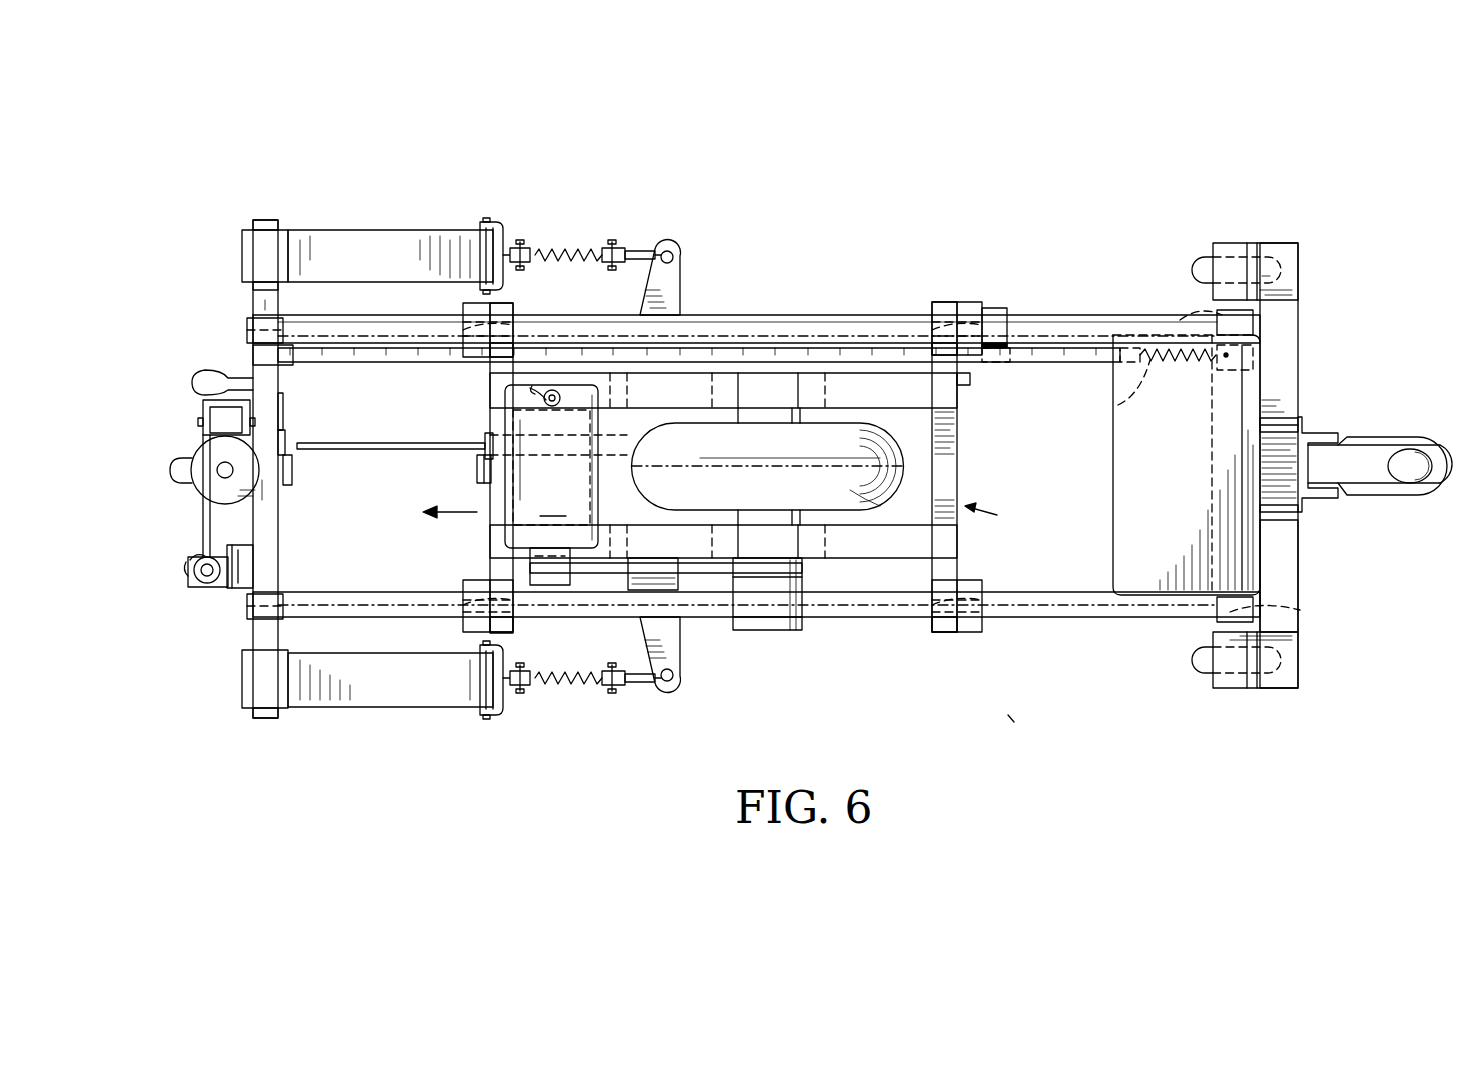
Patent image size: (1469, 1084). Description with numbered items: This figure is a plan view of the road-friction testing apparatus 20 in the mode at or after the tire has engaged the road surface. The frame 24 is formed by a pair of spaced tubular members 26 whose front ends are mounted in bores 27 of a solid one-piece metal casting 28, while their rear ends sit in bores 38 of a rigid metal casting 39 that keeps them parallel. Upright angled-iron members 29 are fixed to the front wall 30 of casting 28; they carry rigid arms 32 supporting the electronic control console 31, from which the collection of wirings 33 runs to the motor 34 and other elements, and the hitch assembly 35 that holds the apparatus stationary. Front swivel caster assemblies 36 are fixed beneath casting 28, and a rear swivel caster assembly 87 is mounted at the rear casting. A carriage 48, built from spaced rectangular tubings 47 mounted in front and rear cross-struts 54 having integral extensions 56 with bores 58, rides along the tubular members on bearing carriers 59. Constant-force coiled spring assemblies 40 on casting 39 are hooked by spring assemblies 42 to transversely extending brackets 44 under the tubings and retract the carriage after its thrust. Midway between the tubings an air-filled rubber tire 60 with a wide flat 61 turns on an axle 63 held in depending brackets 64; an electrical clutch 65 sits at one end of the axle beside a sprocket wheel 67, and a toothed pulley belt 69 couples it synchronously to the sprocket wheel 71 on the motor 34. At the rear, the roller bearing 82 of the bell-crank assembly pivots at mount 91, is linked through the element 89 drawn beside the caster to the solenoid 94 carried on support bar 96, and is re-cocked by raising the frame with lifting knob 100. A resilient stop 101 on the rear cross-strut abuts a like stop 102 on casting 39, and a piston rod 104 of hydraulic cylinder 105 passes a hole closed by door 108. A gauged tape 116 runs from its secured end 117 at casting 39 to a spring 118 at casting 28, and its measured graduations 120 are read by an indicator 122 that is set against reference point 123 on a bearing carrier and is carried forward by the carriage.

The apparatus 20 is at (1008, 715).
The frame 24 is at (734, 330).
The tubular members 26 is at (1098, 315).
The bores 27 is at (1180, 318).
The solid one-piece metal casting 28 is at (1290, 325).
The upright angled-iron members 29 is at (1320, 433).
The front wall 30 is at (1298, 580).
The electronic control console 31 is at (1113, 480).
The rigid arms 32 is at (1272, 418).
The collection of wirings 33 is at (544, 392).
The motor 34 is at (558, 466).
The hitch assembly 35 is at (1410, 437).
The front swivel caster assemblies 36 is at (1198, 262).
The bores 38 is at (247, 325).
The rigid metal casting 39 is at (270, 512).
The constant-force coiled spring assemblies 40 is at (358, 230).
The spring assemblies 42 is at (580, 250).
The transversely extending brackets 44 is at (672, 275).
The rectangular tubings 47 is at (886, 406).
The carriage 48 is at (994, 516).
The cross-struts 54 is at (958, 470).
The integral extensions 56 is at (513, 308).
The bores 58 is at (513, 337).
The bearing carriers 59 is at (463, 306).
The air-filled rubber tire 60 is at (870, 494).
The flat 61 is at (782, 466).
The axle 63 is at (738, 412).
The depending brackets 64 is at (712, 390).
The electrical clutch 65 is at (782, 630).
The sprocket wheel 67 is at (802, 568).
The toothed pulley belt 69 is at (726, 575).
The sprocket wheel 71 is at (572, 585).
The roller bearing 82 is at (210, 415).
The swivel caster assembly 87 is at (176, 475).
The link 89 is at (198, 492).
The pivotal mount 91 is at (286, 393).
The solenoid 94 is at (200, 588).
The support bar 96 is at (250, 570).
The lifting knob 100 is at (198, 378).
The resilient or rubber stop 101 is at (475, 478).
The resilient or rubber stop 102 is at (296, 483).
The hydraulically-actuated piston rod 104 is at (406, 443).
The hydraulic cylinder 105 is at (485, 438).
The door 108 is at (288, 437).
The gauged tape 116 is at (966, 385).
The secured end 117 is at (256, 362).
The spring 118 is at (1116, 406).
The measured graduations 120 is at (1010, 362).
The indicator 122 is at (1007, 312).
The reference point 123 is at (990, 308).